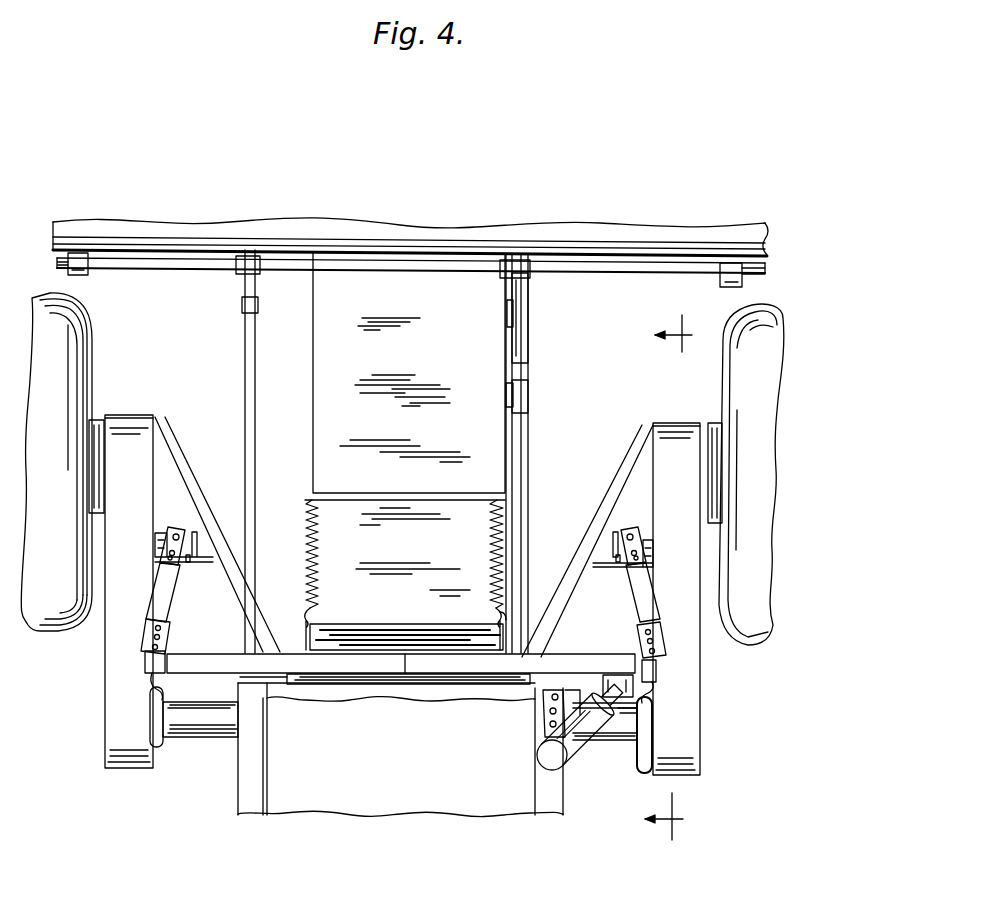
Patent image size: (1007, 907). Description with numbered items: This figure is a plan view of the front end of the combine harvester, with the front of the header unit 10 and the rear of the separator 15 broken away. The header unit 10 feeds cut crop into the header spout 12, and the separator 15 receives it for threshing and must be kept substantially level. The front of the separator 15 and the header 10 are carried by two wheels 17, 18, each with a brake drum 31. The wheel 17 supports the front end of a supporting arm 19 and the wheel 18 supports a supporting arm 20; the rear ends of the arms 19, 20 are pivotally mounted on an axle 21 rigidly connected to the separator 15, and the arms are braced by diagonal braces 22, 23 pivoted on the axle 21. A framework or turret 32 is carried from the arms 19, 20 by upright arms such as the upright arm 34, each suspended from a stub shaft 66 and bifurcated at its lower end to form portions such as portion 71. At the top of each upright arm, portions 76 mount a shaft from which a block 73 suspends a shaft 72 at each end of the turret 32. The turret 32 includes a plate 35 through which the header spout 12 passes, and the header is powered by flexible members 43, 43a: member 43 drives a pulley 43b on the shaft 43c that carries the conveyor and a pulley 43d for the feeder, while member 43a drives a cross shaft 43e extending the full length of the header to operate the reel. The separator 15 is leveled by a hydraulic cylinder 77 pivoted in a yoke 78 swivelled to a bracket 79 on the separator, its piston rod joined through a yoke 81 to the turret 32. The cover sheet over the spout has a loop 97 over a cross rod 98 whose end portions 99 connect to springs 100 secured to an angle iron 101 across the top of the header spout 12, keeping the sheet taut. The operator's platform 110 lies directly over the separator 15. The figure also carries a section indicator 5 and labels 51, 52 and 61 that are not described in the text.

The section line 5- 5 is at (675, 577).
The header unit 10 is at (491, 228).
The header spout 12 is at (315, 292).
The separator 15 is at (245, 808).
The wheel 17 is at (735, 390).
The wheel 18 is at (75, 370).
The supporting arm 19 is at (700, 722).
The supporting arm 20 is at (105, 716).
The axle 21 is at (210, 720).
The diagonal brace 22 is at (600, 525).
The diagonal brace 23 is at (192, 480).
The brake drum 31 is at (710, 483).
The turret 32 is at (572, 661).
The upright arm 34 is at (165, 610).
The plate 35 is at (641, 610).
The flexible member 43 is at (530, 478).
The flexible member 43a is at (245, 400).
The pulley 43b is at (528, 408).
The shaft 43c is at (505, 395).
The pulley 43d is at (530, 350).
The cross shaft 43e is at (588, 271).
The left hub plate 51 is at (100, 482).
The bottom plate 52 is at (388, 679).
The pivot pin 61 is at (186, 563).
The stub shaft 66 is at (617, 563).
The portion 71 is at (175, 530).
The shaft 72 is at (150, 683).
The block 73 is at (145, 663).
The portion 76 is at (150, 640).
The hydraulic cylinder 77 is at (555, 752).
The yoke 78 is at (594, 745).
The bracket 79 is at (548, 703).
The yoke 81 is at (620, 713).
The loop 97 is at (385, 632).
The cross rod 98 is at (507, 623).
The end portions 99 is at (305, 615).
The springs 100 is at (490, 537).
The angle iron 101 is at (399, 494).
The operator's platform 110 is at (405, 790).